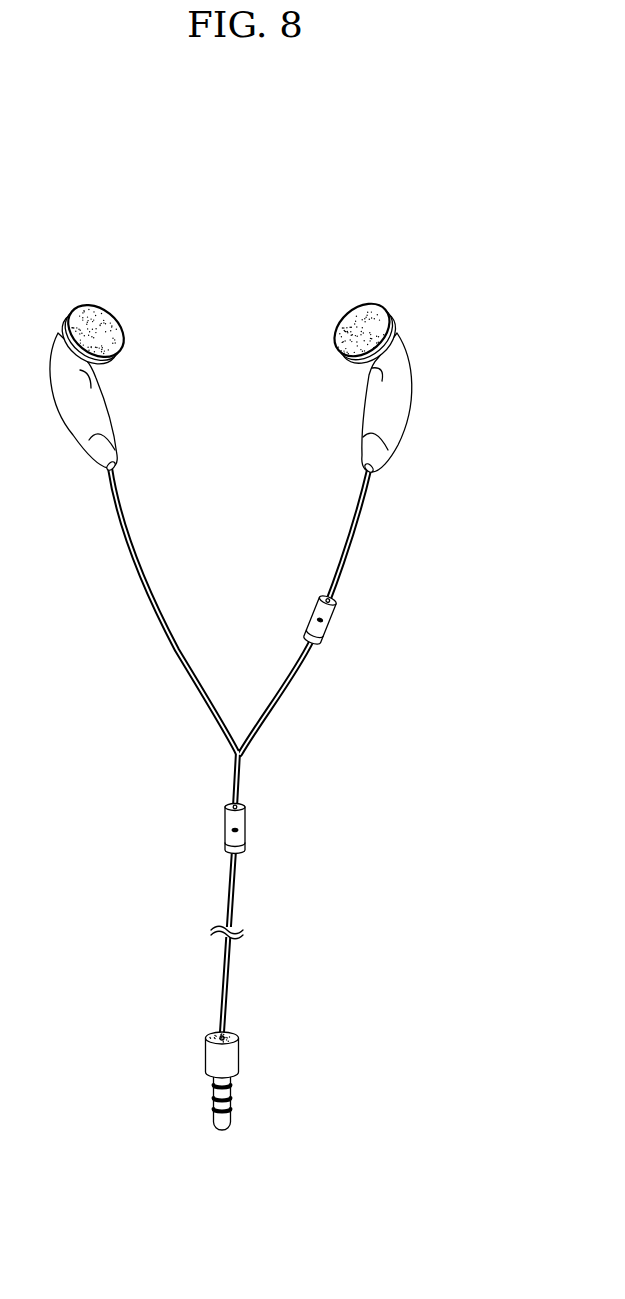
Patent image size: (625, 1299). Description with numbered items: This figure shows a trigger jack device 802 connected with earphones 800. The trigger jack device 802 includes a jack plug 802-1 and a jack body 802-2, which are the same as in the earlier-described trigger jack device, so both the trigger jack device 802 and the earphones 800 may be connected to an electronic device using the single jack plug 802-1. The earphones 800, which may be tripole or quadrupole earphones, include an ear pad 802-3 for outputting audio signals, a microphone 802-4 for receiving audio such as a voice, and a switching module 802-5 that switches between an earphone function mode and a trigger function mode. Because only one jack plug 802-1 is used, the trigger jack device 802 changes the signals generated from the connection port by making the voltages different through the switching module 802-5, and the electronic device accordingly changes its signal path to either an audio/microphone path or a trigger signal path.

The earphones 800 is at (312, 731).
The trigger jack device 802 is at (255, 1099).
The jack plug 802-1 is at (230, 1100).
The jack body 802-2 is at (238, 1043).
The ear pad 802-3 is at (105, 318).
The microphone 802-4 is at (333, 623).
The switching module 802-5 is at (245, 825).